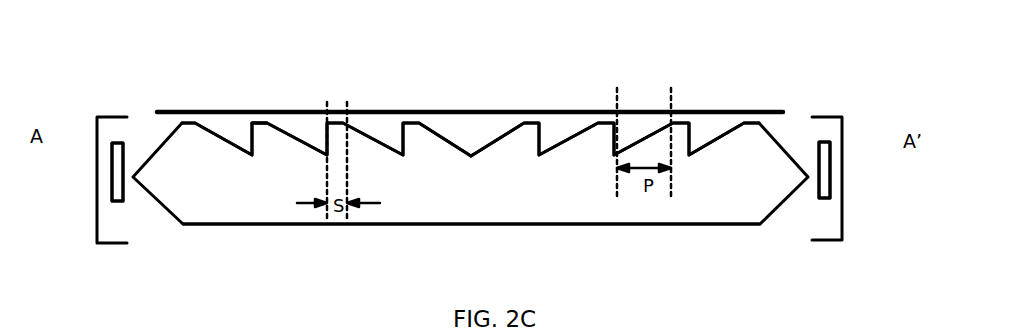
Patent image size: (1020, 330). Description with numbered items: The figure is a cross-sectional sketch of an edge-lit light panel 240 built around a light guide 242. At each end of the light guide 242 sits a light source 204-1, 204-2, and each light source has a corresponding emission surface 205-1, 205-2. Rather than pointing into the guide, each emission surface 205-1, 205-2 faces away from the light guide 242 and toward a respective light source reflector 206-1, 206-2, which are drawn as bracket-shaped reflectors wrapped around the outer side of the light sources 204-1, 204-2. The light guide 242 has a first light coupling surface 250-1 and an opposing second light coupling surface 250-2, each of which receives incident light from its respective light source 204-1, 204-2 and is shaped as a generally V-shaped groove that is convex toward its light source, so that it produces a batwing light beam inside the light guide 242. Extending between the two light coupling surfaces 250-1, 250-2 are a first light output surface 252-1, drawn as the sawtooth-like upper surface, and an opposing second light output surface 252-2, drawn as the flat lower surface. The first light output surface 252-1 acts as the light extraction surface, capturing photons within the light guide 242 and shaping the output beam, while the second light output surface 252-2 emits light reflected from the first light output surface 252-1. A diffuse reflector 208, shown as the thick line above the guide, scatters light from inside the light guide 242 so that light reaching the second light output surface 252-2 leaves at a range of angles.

The edge-lit light panel 240 is at (88, 36).
The light guide 242 is at (285, 202).
The diffuse reflector 208 is at (385, 96).
The light source 204-1 is at (123, 160).
The light source 204-2 is at (812, 157).
The emission surface 205-1 is at (110, 192).
The emission surface 205-2 is at (830, 192).
The light source reflector 206-1 is at (100, 135).
The light source reflector 206-2 is at (842, 137).
The first light coupling surface 250-1 is at (167, 143).
The second light coupling surface 250-2 is at (768, 133).
The first light output surface 252-1 is at (262, 123).
The second light output surface 252-2 is at (663, 224).